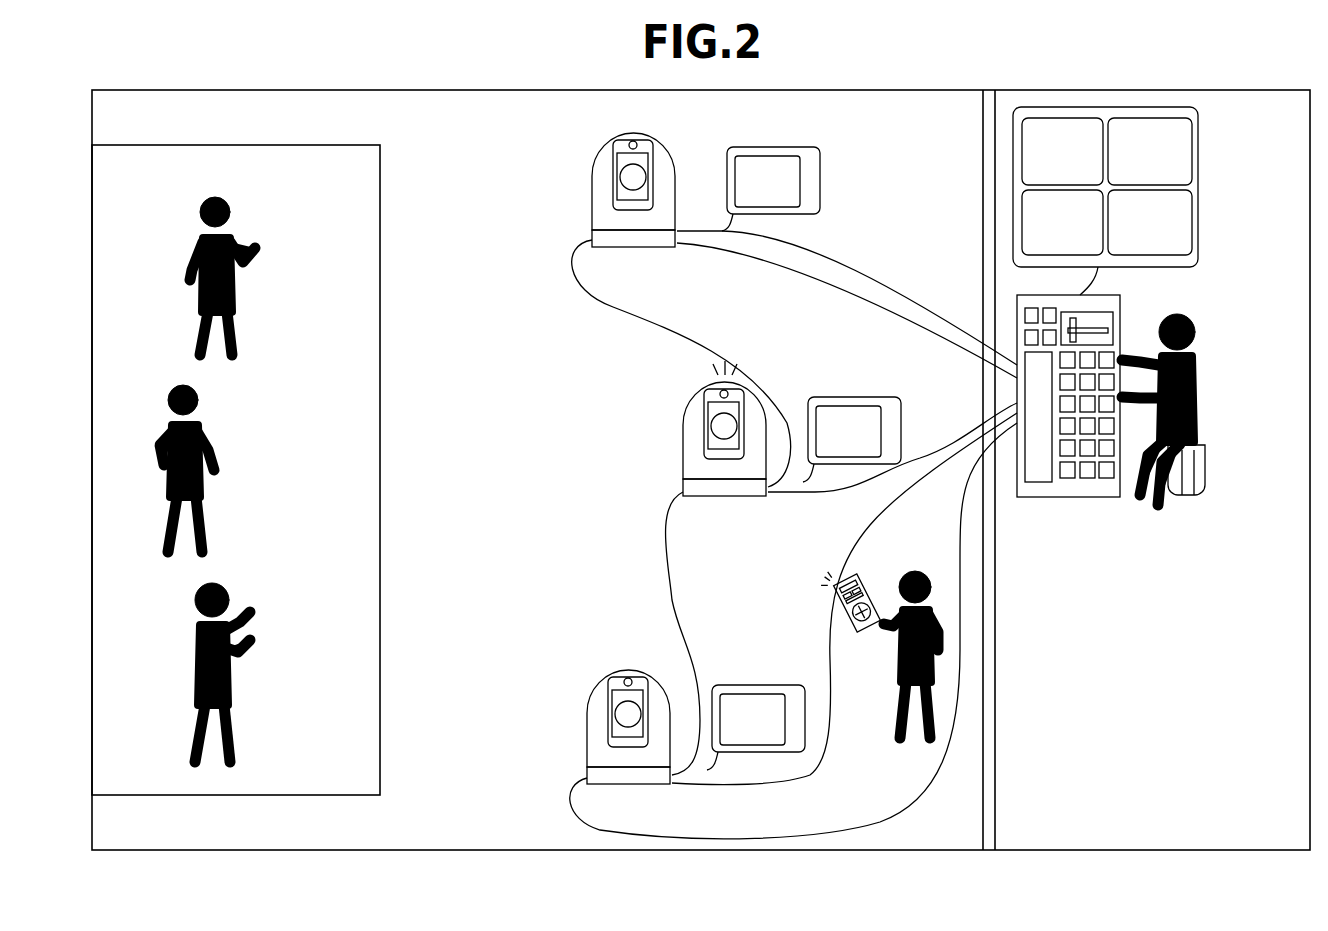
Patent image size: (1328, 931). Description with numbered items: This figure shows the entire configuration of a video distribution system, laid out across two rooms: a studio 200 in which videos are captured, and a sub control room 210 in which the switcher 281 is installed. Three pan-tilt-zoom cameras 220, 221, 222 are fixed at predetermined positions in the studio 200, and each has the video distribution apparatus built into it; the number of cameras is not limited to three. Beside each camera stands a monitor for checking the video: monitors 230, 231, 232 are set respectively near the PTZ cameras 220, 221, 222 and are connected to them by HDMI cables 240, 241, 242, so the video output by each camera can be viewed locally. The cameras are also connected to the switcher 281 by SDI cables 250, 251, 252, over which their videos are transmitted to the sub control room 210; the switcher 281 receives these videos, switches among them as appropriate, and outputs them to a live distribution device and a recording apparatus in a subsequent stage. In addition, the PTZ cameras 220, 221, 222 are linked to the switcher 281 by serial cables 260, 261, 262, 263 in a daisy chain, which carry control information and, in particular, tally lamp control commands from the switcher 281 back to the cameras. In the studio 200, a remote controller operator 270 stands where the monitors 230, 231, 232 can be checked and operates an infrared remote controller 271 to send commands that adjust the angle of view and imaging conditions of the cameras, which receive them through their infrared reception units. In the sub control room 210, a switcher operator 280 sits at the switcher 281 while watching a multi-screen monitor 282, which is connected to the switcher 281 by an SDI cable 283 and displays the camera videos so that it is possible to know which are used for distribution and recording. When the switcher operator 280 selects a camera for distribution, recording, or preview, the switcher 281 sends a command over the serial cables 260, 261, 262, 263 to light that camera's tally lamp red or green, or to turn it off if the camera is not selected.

The studio 200 is at (503, 852).
The sub control room 210 is at (1172, 852).
The PTZ camera 220 is at (590, 178).
The PTZ camera 221 is at (683, 437).
The PTZ camera 222 is at (587, 718).
The monitor 230 is at (768, 147).
The monitor 231 is at (845, 397).
The monitor 232 is at (753, 685).
The HDMI cable 240 is at (720, 228).
The HDMI cable 241 is at (792, 490).
The HDMI cable 242 is at (715, 783).
The SDI cable 250 is at (800, 284).
The SDI cable 251 is at (815, 495).
The SDI cable 252 is at (830, 770).
The serial cable 260 is at (880, 266).
The serial cable 261 is at (615, 306).
The serial cable 262 is at (670, 565).
The serial cable 263 is at (570, 800).
The remote controller operator 270 is at (888, 726).
The infrared remote controller 271 is at (868, 588).
The switcher operator 280 is at (1200, 395).
The switcher 281 is at (1060, 498).
The multi-screen monitor 282 is at (1200, 238).
The SDI cable 283 is at (1100, 282).